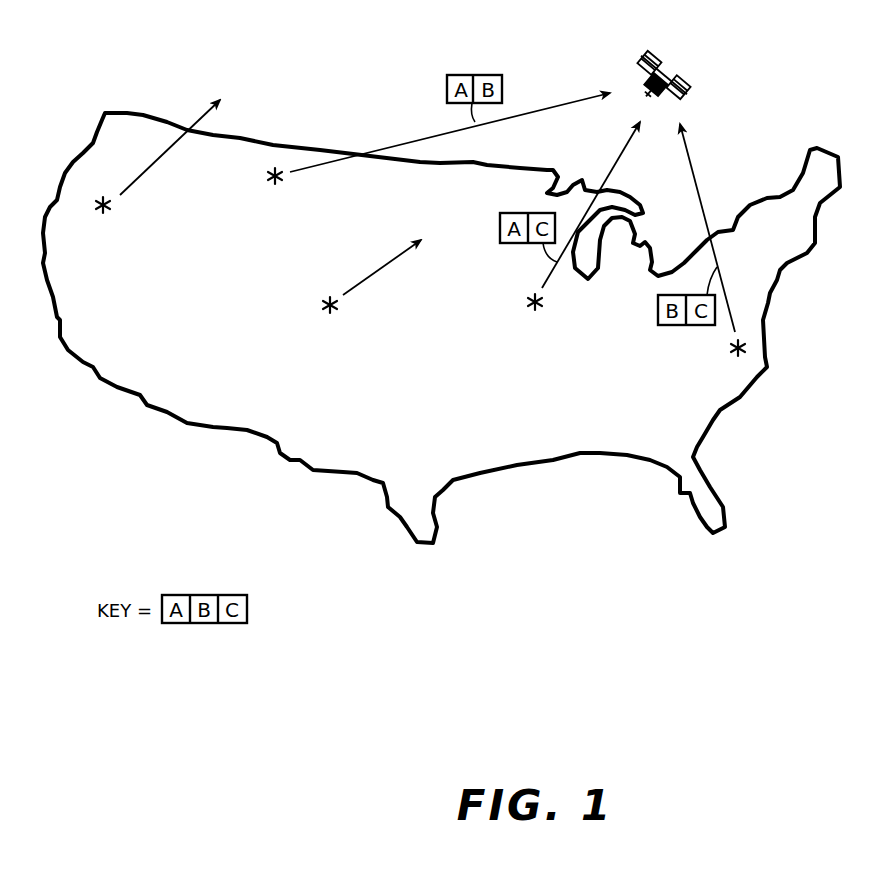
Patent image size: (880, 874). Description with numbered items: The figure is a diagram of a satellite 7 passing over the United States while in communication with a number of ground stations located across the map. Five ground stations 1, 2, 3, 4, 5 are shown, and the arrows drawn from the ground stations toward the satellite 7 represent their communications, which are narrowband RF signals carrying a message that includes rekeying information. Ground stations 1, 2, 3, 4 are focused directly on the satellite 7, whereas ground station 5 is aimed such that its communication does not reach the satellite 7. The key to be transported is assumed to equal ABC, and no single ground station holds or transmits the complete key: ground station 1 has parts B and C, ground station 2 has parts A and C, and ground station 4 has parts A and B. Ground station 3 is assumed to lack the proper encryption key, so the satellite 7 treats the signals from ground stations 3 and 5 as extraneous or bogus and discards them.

The ground station 1 is at (729, 352).
The ground station 2 is at (528, 305).
The ground station 3 is at (323, 305).
The ground station 4 is at (267, 176).
The ground station 5 is at (95, 205).
The satellite 7 is at (690, 70).